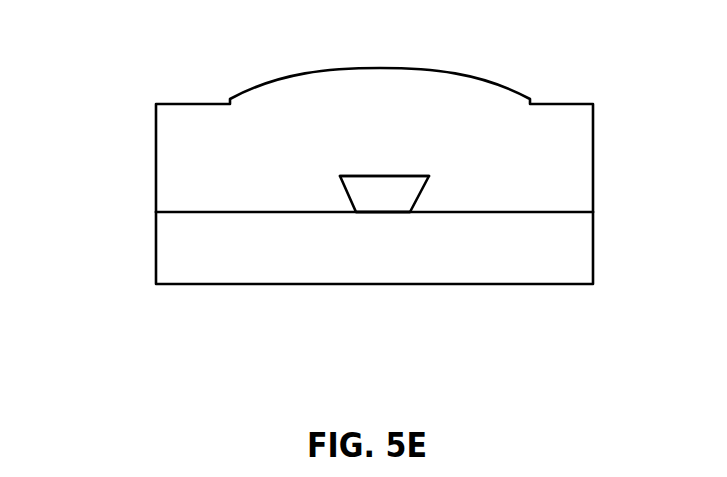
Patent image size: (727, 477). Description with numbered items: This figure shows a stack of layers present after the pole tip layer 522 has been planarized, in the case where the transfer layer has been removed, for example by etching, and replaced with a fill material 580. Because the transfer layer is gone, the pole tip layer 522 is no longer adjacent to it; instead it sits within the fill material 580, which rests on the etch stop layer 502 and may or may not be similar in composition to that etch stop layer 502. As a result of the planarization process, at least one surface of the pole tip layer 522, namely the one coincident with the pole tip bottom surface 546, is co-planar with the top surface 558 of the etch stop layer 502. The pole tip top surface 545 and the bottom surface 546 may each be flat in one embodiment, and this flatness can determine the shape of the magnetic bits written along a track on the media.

The etch stop layer 502 is at (156, 237).
The pole tip layer 522 is at (357, 188).
The pole tip top surface 545 is at (389, 176).
The pole tip bottom surface 546 is at (390, 212).
The top surface of the etch stop layer 558 is at (523, 212).
The fill material 580 is at (593, 125).